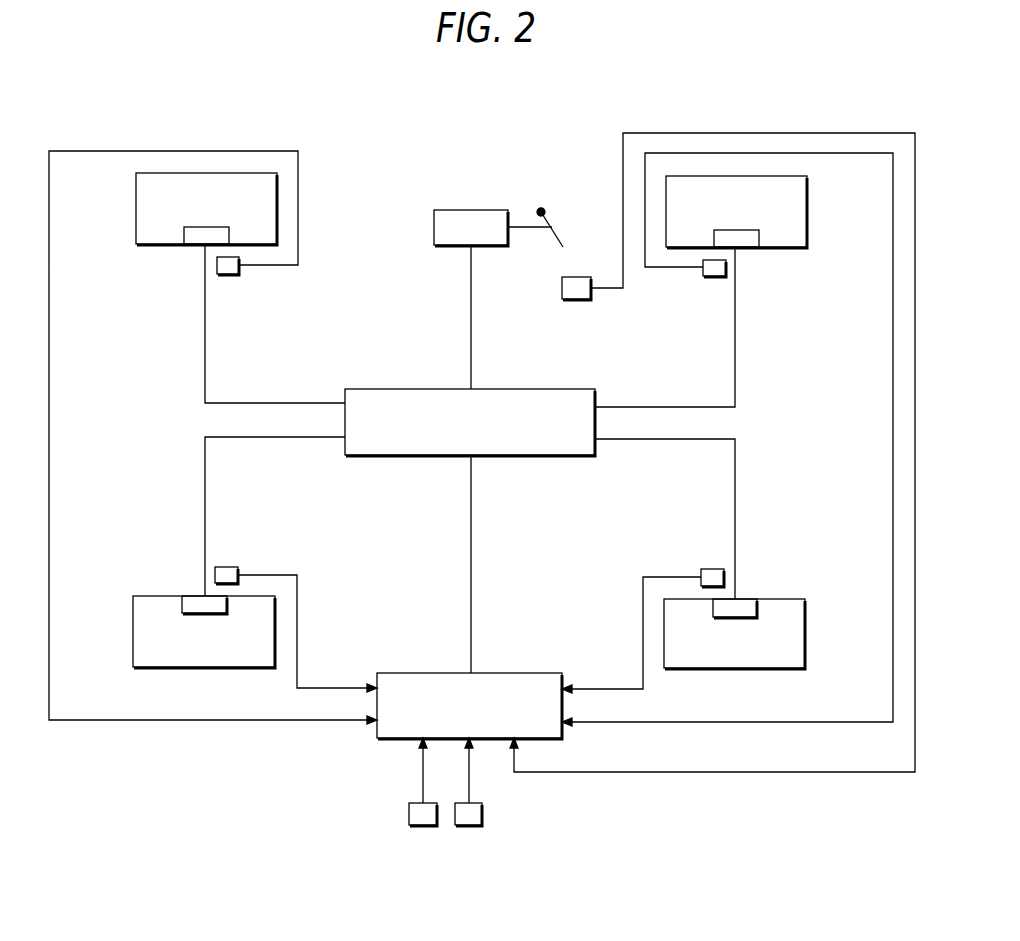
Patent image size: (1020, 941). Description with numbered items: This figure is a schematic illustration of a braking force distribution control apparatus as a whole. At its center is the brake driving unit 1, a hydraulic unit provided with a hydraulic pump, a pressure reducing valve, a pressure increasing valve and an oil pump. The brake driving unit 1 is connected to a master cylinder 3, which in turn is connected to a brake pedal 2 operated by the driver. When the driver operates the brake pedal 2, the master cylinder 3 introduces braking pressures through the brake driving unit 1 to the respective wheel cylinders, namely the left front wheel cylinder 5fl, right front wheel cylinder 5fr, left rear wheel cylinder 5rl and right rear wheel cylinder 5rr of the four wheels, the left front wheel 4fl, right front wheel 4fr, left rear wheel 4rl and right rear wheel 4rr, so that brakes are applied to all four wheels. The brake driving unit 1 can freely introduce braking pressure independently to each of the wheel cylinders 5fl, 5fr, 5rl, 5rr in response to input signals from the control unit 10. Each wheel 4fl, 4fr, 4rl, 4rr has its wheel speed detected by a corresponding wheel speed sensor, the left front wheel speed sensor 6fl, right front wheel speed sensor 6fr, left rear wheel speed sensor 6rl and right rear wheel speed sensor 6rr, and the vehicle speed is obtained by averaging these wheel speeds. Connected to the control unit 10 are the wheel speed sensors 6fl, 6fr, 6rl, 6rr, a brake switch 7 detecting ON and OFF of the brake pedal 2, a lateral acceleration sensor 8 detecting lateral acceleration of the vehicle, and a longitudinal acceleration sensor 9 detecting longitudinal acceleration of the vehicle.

The brake driving unit 1 is at (530, 389).
The brake pedal 2 is at (552, 233).
The master cylinder 3 is at (470, 210).
The right front wheel 4fr is at (136, 210).
The left front wheel 4fl is at (133, 630).
The right rear wheel 4rr is at (807, 210).
The left rear wheel 4rl is at (805, 636).
The right front wheel cylinder 5fr is at (205, 227).
The left front wheel cylinder 5fl is at (203, 613).
The right rear wheel cylinder 5rr is at (735, 230).
The left rear wheel cylinder 5rl is at (733, 617).
The right front wheel speed sensor 6fr is at (232, 275).
The left front wheel speed sensor 6fl is at (222, 567).
The right rear wheel speed sensor 6rr is at (712, 277).
The left rear wheel speed sensor 6rl is at (708, 569).
The brake switch 7 is at (562, 288).
The lateral acceleration sensor 8 is at (425, 826).
The longitudinal acceleration sensor 9 is at (469, 826).
The control unit 10 is at (512, 673).